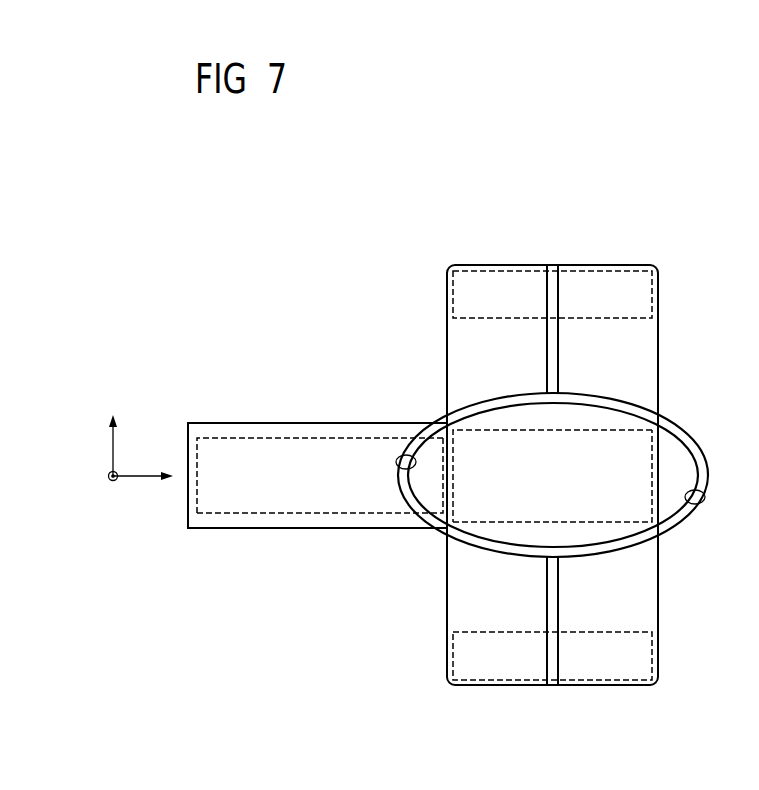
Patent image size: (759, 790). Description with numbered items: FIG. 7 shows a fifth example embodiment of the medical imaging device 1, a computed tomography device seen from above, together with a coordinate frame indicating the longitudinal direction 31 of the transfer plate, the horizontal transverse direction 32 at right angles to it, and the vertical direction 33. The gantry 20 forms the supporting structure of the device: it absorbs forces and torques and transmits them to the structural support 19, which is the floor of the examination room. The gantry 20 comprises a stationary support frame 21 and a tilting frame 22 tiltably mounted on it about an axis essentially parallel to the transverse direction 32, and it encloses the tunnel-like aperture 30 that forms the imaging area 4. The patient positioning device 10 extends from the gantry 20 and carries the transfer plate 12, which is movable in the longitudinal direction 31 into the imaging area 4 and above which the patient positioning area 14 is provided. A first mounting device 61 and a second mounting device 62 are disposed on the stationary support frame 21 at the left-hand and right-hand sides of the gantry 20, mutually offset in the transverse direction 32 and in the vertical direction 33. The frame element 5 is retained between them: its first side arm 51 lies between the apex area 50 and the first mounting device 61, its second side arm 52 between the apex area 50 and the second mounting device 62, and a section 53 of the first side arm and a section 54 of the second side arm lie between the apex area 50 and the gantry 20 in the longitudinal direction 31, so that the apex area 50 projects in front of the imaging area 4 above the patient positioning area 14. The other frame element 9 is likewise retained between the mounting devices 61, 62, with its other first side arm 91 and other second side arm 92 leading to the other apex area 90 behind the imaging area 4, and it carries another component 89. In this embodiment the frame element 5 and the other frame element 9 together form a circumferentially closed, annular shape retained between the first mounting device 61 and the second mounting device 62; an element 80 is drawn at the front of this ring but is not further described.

The medical imaging device 1 is at (291, 243).
The patient positioning device 10 is at (218, 404).
The transfer plate 12 is at (277, 432).
The patient positioning area 14 is at (345, 450).
The structural support 19 is at (254, 640).
The gantry 20 is at (428, 289).
The stationary support frame 21 is at (640, 295).
The tilting frame 22 is at (640, 335).
The imaging area 4 is at (580, 523).
The tunnel-like aperture 30 is at (552, 476).
The frame element 5 is at (405, 480).
The apex area 50 is at (480, 511).
The first side arm 51 is at (478, 542).
The second side arm 52 is at (478, 412).
The section of the first side arm 53 is at (432, 530).
The section of the second side arm 54 is at (442, 422).
The first mounting device 61 is at (552, 685).
The second mounting device 62 is at (552, 266).
The connecting point 80 is at (415, 465).
The other component 89 is at (702, 505).
The other frame element 9 is at (702, 467).
The other apex area 90 is at (625, 511).
The other first side arm 91 is at (627, 542).
The other second side arm 92 is at (628, 408).
The longitudinal direction 31 is at (152, 477).
The transverse direction 32 is at (115, 442).
The vertical direction 33 is at (113, 481).